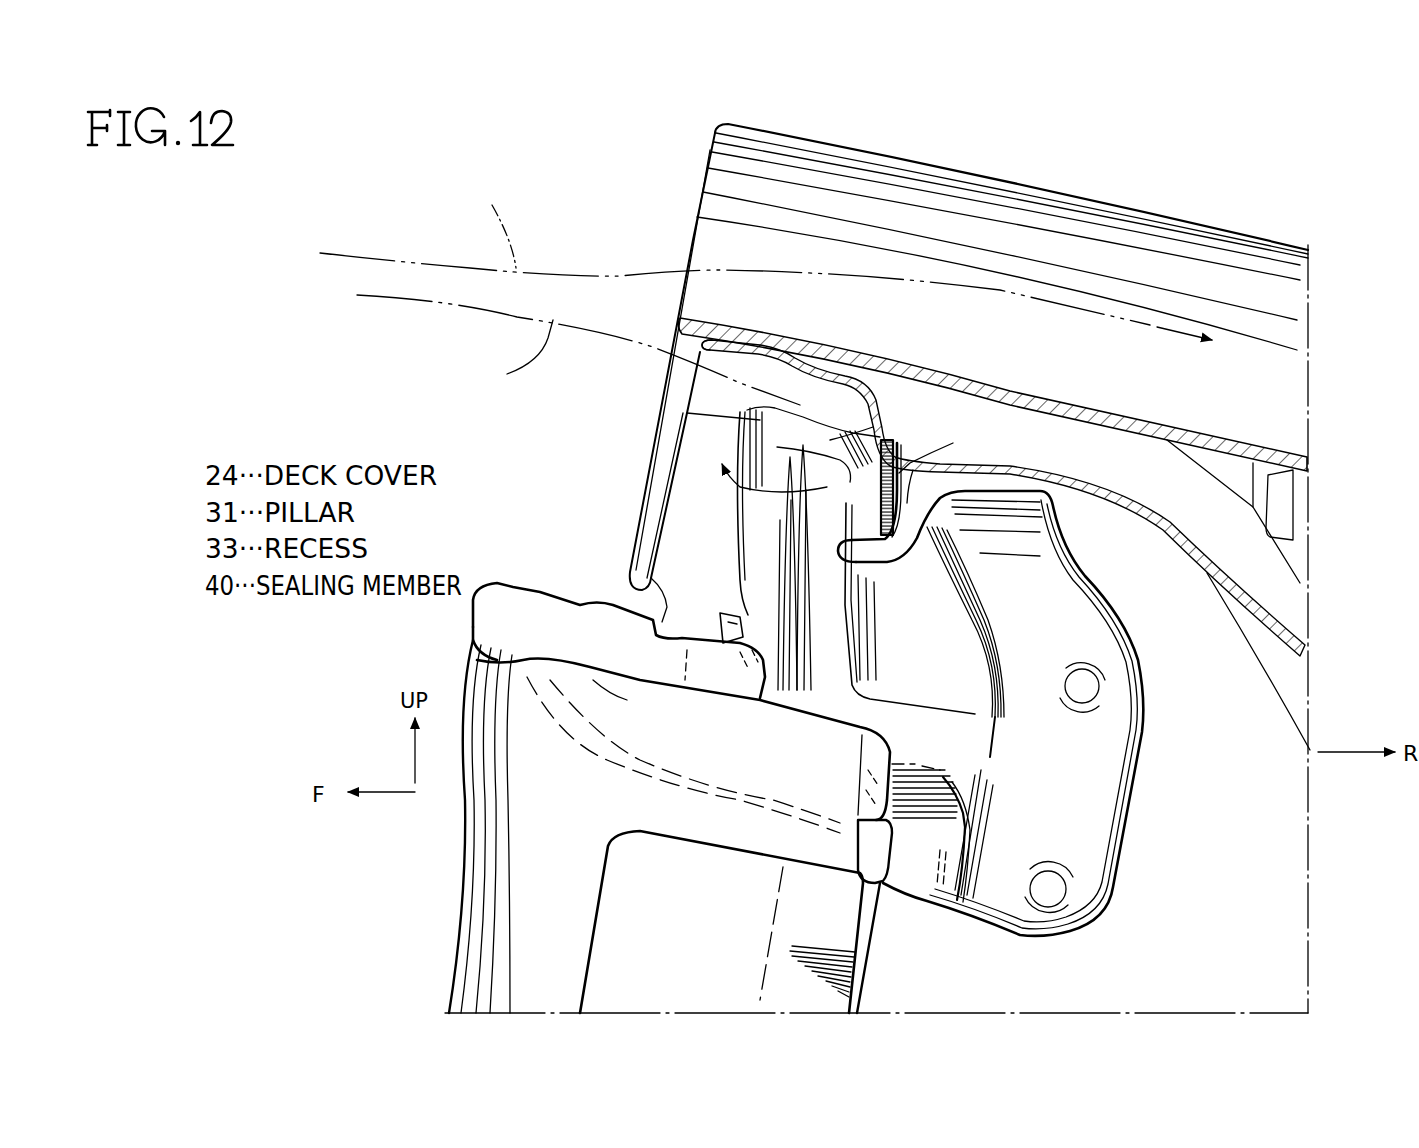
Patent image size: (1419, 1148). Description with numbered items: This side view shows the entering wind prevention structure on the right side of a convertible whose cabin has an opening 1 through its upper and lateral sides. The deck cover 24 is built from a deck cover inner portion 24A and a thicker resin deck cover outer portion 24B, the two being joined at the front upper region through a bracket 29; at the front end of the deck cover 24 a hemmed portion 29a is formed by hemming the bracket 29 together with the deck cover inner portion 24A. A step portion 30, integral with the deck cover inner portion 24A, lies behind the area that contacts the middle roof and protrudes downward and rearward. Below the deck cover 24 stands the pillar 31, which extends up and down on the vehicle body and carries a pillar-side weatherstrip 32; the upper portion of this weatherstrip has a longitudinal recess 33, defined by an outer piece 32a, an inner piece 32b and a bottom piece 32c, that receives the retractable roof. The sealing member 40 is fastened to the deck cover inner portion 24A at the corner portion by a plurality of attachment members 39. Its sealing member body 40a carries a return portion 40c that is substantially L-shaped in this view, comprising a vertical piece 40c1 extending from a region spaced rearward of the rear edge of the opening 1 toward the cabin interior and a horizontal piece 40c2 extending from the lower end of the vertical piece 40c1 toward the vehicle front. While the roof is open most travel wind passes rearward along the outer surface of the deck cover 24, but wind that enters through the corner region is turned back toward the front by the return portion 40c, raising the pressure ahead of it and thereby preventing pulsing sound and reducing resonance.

The opening 1 is at (450, 417).
The deck cover 24 is at (1265, 240).
The deck cover inner portion 24A is at (1085, 490).
The deck cover outer portion 24B is at (967, 368).
The bracket 29 is at (860, 345).
The hemmed portion 29a is at (733, 340).
The step portion 30 is at (872, 415).
The pillar 31 is at (692, 944).
The pillar-side weatherstrip 32 is at (462, 924).
The outer piece 32a is at (516, 585).
The inner piece 32b is at (600, 687).
The bottom piece 32c is at (477, 640).
The recess 33 is at (557, 622).
The attachment member 39 is at (1087, 688).
The sealing member 40 is at (1130, 806).
The sealing member body 40a is at (1047, 597).
The return portion 40c is at (898, 568).
The vertical piece 40c1 is at (910, 467).
The horizontal piece 40c2 is at (853, 543).